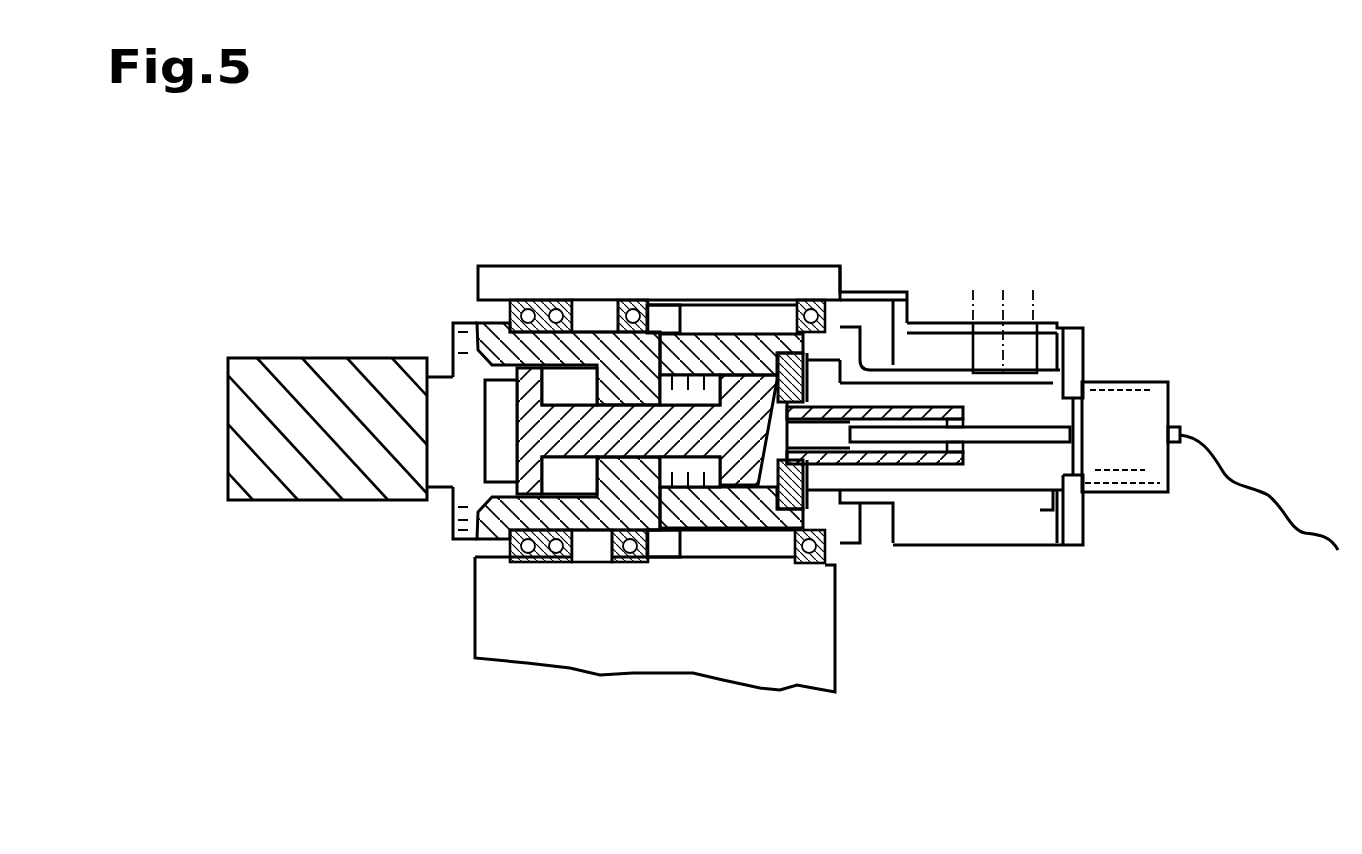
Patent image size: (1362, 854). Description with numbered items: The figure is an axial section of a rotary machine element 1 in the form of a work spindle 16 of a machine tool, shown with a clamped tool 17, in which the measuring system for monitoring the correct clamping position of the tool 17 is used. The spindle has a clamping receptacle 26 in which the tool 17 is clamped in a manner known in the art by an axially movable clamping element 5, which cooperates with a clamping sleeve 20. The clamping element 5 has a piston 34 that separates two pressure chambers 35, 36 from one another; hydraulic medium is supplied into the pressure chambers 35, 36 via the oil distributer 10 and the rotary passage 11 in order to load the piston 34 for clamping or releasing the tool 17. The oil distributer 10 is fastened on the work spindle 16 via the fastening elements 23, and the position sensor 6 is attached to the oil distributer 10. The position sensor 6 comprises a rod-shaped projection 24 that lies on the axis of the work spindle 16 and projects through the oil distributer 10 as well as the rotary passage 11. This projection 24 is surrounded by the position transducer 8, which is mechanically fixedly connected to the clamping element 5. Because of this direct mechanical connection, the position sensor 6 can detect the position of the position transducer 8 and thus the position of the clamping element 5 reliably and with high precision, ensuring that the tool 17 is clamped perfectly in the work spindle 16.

The rotary machine element 1 is at (298, 783).
The clamping element 5 is at (618, 462).
The position sensor 6 is at (1158, 395).
The position transducer 8 is at (948, 453).
The oil distributer 10 is at (934, 348).
The rotary passage 11 is at (1038, 372).
The work spindle 16 is at (614, 252).
The tool 17 is at (338, 385).
The clamping sleeve 20 is at (887, 462).
The fastening elements 23 is at (866, 296).
The rod-shaped projection 24 is at (1018, 440).
The clamping receptacle 26 is at (486, 540).
The piston 34 is at (738, 468).
The pressure chamber 35 is at (697, 390).
The pressure chamber 36 is at (770, 478).